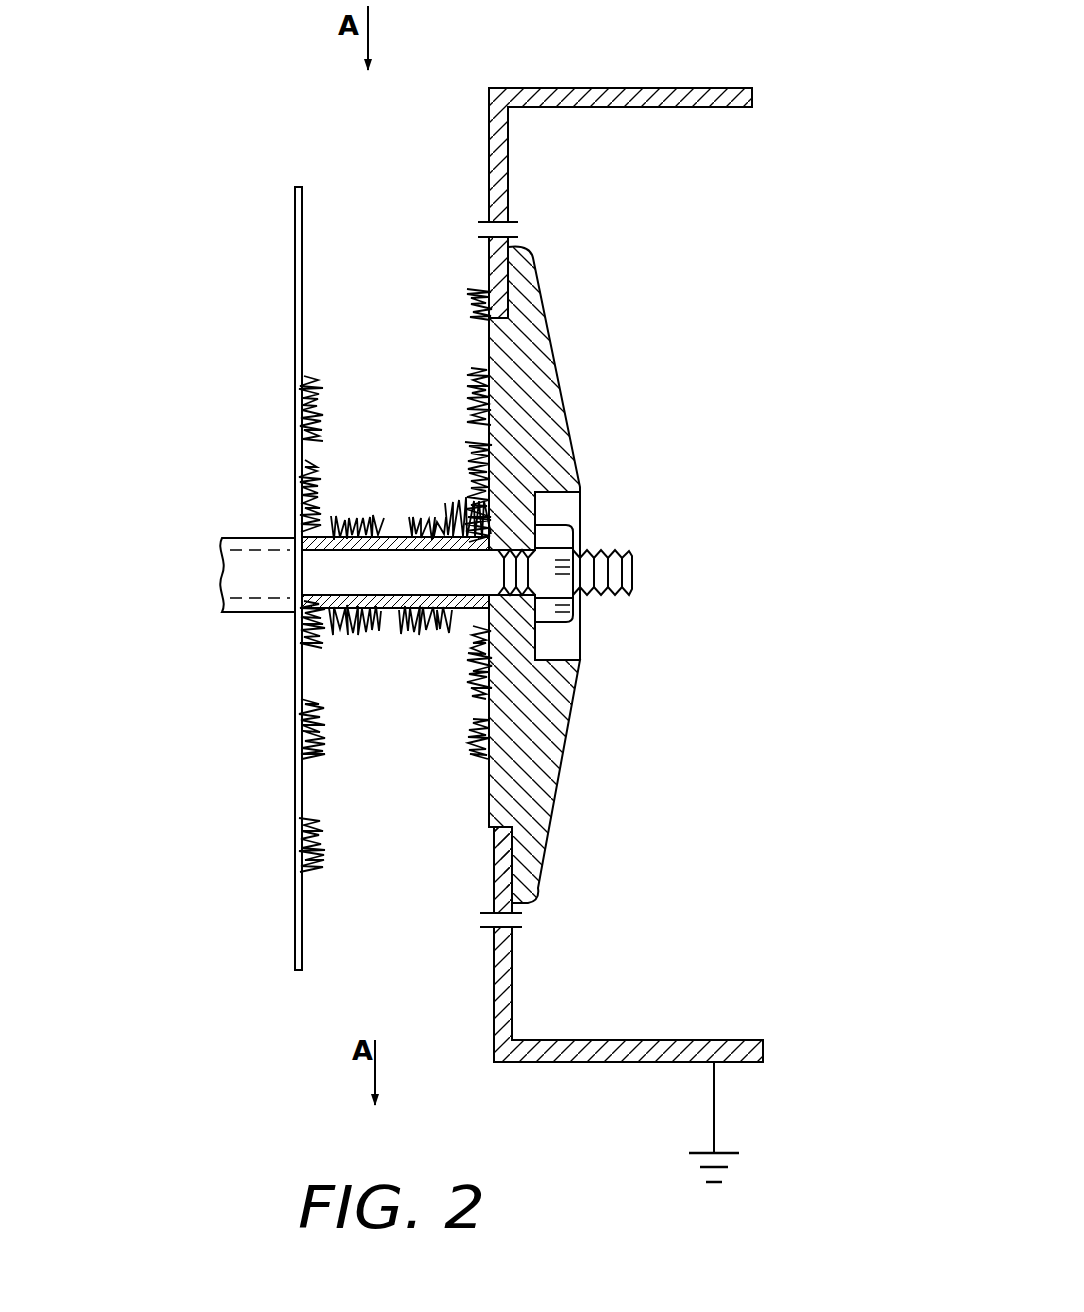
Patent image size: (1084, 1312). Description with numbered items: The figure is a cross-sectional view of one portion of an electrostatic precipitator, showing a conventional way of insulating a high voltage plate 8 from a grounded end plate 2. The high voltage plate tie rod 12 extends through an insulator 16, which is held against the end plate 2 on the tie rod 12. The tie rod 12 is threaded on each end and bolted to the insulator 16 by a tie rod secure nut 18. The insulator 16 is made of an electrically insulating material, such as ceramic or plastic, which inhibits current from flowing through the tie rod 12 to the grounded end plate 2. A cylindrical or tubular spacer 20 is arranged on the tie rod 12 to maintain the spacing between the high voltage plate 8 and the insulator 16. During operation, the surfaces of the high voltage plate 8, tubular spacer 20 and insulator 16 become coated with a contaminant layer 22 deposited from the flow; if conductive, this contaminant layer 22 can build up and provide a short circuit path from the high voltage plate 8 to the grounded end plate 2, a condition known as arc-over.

The grounded end plate 2 is at (486, 257).
The high voltage plate 8 is at (291, 271).
The high voltage plate tie rod 12 is at (339, 577).
The insulator 16 is at (569, 750).
The tie rod secure nut 18 is at (558, 516).
The tubular spacer 20 is at (393, 713).
The contaminant layer 22 is at (468, 413).